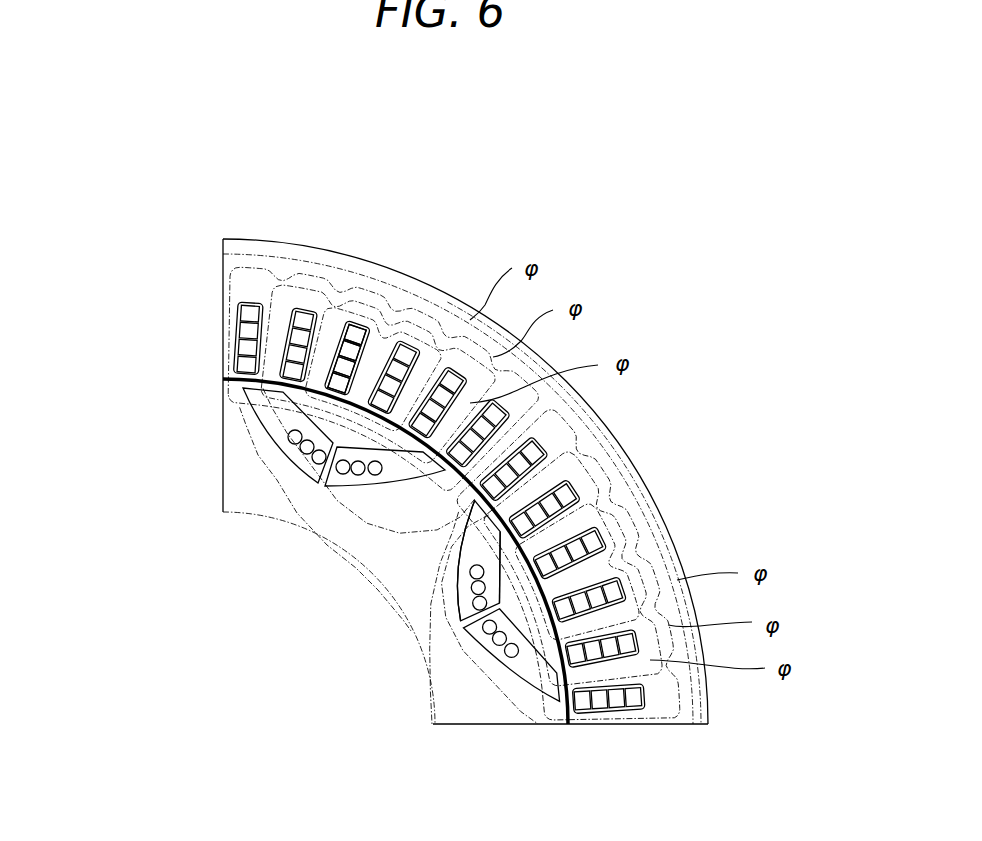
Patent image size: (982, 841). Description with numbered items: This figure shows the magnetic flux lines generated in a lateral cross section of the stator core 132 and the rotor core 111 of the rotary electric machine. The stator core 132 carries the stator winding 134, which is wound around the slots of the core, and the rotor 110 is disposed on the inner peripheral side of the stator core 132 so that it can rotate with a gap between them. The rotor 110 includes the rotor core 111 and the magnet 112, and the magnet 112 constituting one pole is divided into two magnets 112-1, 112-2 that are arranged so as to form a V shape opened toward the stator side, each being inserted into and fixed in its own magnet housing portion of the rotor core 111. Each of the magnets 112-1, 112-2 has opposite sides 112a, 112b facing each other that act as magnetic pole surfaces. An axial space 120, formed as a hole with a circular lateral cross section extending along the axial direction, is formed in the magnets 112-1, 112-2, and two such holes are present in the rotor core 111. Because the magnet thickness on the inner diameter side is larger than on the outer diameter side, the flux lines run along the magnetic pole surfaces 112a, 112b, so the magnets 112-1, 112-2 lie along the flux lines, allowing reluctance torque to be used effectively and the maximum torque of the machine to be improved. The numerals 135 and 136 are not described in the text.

The rotor 110 is at (226, 205).
The rotor core 111 is at (523, 716).
The magnet 112 is at (122, 495).
The magnet 112-1 is at (283, 455).
The magnet 112-2 is at (353, 488).
The magnetic pole surface 112a is at (498, 555).
The magnetic pole surface 112b is at (465, 566).
The axial space 120 is at (292, 437).
The stator core 132 is at (692, 705).
The stator winding 134 is at (357, 332).
The coil conductors in slot 135 is at (337, 367).
The tooth tip inner peripheral surface 136 is at (312, 391).